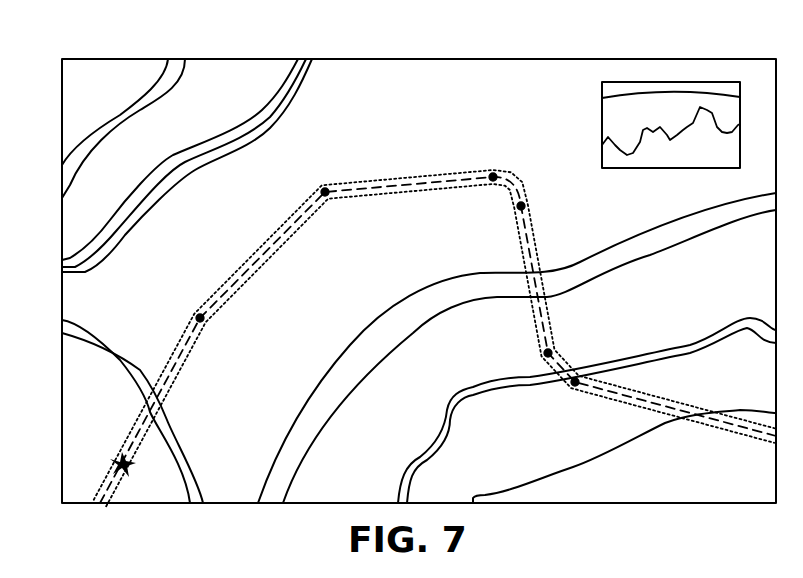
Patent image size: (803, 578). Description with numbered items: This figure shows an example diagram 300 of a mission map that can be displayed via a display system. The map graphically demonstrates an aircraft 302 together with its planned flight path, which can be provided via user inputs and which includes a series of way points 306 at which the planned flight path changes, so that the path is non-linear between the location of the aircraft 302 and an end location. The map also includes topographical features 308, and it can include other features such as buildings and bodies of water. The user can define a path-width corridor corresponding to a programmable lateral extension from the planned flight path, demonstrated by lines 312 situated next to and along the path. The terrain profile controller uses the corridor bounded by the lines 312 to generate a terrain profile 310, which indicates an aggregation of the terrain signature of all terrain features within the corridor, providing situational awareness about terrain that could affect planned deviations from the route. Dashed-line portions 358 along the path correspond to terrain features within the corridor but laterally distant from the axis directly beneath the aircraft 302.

The diagram of the mission map 300 is at (104, 46).
The aircraft 302 is at (124, 449).
The way points 306 is at (199, 316).
The topographical features 308 is at (261, 97).
The terrain profile 310 is at (601, 122).
The lines 312 is at (527, 178).
The dashed-line portions 358 is at (391, 179).